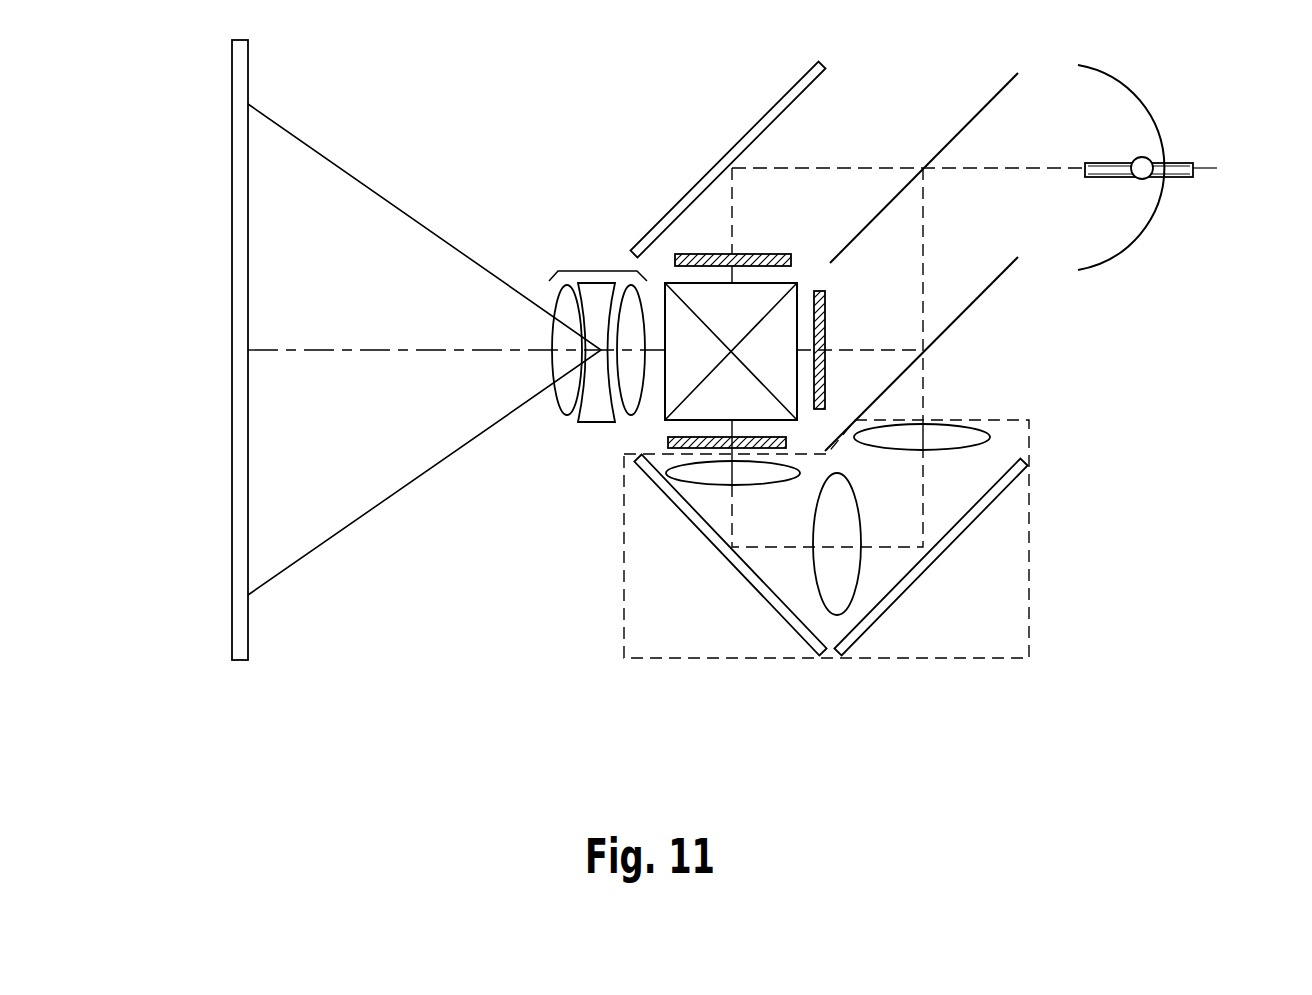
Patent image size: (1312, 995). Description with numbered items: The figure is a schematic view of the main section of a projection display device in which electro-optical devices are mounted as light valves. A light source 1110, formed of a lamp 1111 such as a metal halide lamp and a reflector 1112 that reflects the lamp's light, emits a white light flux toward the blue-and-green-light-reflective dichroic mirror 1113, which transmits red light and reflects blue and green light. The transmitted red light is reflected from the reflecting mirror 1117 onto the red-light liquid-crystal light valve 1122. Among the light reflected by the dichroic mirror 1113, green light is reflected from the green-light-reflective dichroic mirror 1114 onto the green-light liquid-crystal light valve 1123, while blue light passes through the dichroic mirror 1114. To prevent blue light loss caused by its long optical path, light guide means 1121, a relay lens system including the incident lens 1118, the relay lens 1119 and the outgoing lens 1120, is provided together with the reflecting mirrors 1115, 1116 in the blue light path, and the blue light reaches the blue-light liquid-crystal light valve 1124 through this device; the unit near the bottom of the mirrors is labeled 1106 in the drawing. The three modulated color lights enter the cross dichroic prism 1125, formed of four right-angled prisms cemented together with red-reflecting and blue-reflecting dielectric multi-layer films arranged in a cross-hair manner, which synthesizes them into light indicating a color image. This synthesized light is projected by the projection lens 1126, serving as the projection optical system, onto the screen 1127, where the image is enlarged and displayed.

The light source unit 1106 is at (881, 585).
The light source 1110 is at (1168, 157).
The lamp 1111 is at (1143, 158).
The reflector 1112 is at (1148, 232).
The dichroic mirror 1113 is at (970, 117).
The dichroic mirror 1114 is at (988, 285).
The reflecting mirror 1115 is at (1003, 495).
The reflecting mirror 1116 is at (795, 635).
The reflecting mirror 1117 is at (777, 99).
The incident lens 1118 is at (985, 432).
The relay lens 1119 is at (860, 583).
The outgoing lens 1120 is at (698, 476).
The light guide means 1121 is at (1030, 580).
The red-light liquid-crystal light valve 1122 is at (770, 252).
The green-light liquid-crystal light valve 1123 is at (827, 303).
The blue-light liquid-crystal light valve 1124 is at (660, 443).
The cross dichroic prism 1125 is at (658, 412).
The projection lens 1126 is at (592, 270).
The screen 1127 is at (250, 625).